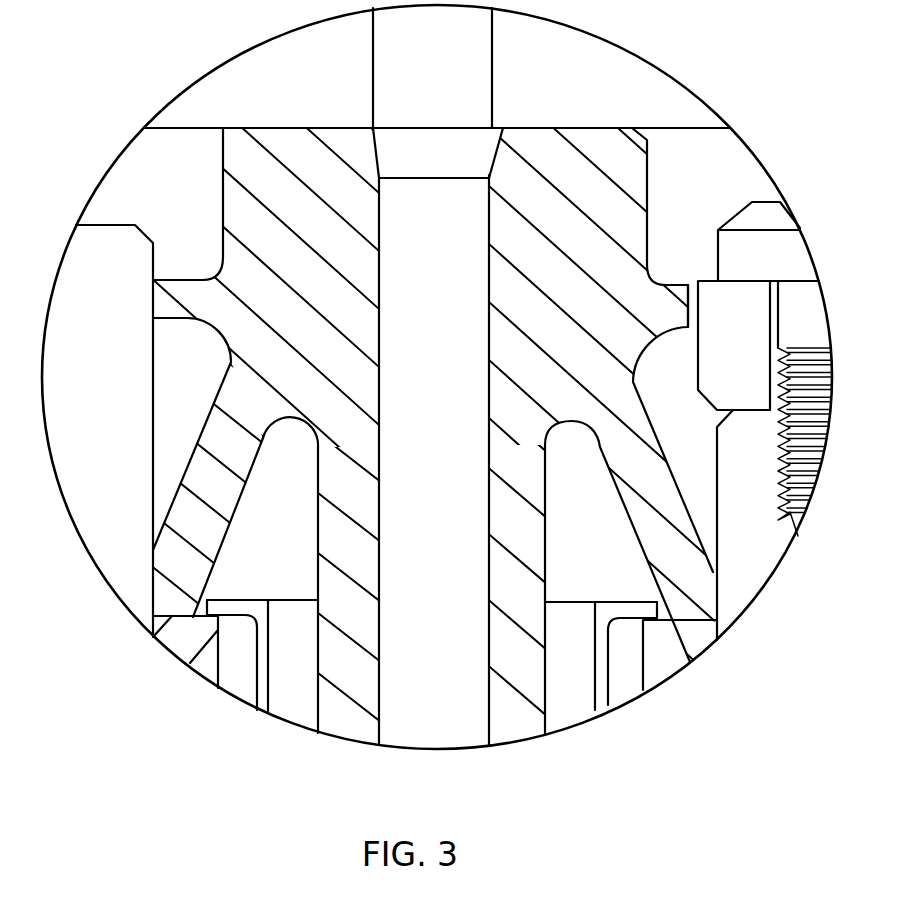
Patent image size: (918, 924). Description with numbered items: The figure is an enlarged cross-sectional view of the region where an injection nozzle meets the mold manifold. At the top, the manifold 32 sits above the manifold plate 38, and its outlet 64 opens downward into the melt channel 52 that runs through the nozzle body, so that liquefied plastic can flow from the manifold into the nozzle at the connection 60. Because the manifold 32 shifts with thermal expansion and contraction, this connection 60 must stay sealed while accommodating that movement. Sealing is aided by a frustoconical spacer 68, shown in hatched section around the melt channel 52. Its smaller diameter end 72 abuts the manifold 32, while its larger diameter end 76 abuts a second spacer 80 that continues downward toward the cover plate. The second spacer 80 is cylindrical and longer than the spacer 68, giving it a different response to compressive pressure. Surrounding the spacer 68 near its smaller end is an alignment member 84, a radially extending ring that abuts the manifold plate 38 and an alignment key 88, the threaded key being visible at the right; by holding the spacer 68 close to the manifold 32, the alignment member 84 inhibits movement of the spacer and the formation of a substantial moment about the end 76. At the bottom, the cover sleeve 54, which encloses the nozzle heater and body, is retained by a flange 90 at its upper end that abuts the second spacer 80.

The manifold 32 is at (290, 84).
The outlet of manifold 64 is at (450, 64).
The connection 60 is at (462, 126).
The smaller diameter end of spacer 72 is at (593, 128).
The melt channel 52 is at (450, 391).
The manifold plate 38 is at (110, 380).
The frustoconical spacer 68 is at (648, 182).
The alignment member 84 is at (153, 298).
The alignment key 88 is at (742, 310).
The larger diameter end of spacer 76 is at (716, 603).
The cover sleeve 54 is at (562, 601).
The flange 90 is at (621, 601).
The second spacer 80 is at (673, 648).